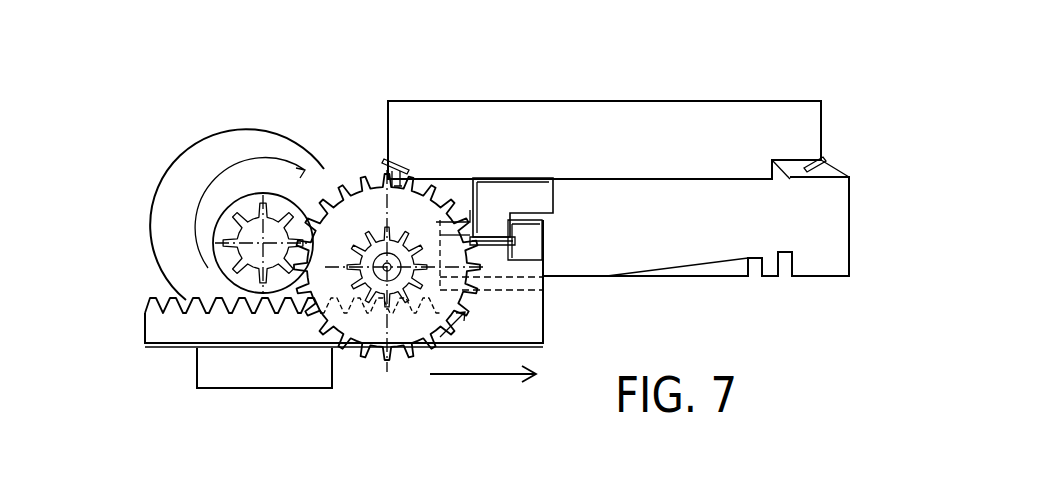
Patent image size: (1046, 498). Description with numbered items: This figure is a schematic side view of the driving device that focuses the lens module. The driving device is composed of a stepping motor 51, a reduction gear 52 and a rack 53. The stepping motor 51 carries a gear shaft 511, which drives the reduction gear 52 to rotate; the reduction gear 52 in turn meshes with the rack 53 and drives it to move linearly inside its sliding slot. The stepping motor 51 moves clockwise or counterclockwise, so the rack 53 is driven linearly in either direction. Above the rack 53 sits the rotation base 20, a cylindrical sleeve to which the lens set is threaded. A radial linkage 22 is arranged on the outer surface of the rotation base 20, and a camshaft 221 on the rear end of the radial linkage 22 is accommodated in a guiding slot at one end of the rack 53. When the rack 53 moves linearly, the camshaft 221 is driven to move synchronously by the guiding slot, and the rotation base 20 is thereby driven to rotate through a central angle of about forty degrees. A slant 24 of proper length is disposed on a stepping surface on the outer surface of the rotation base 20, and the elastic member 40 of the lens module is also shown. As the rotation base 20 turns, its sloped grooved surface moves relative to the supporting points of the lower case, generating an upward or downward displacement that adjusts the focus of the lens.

The rotation base 20 is at (771, 123).
The radial linkage 22 is at (530, 190).
The camshaft 221 is at (492, 235).
The slant 24 is at (827, 160).
The elastic member 40 is at (818, 173).
The stepping motor 51 is at (188, 200).
The gear shaft 511 is at (238, 218).
The reduction gear 52 is at (363, 213).
The rack 53 is at (175, 333).